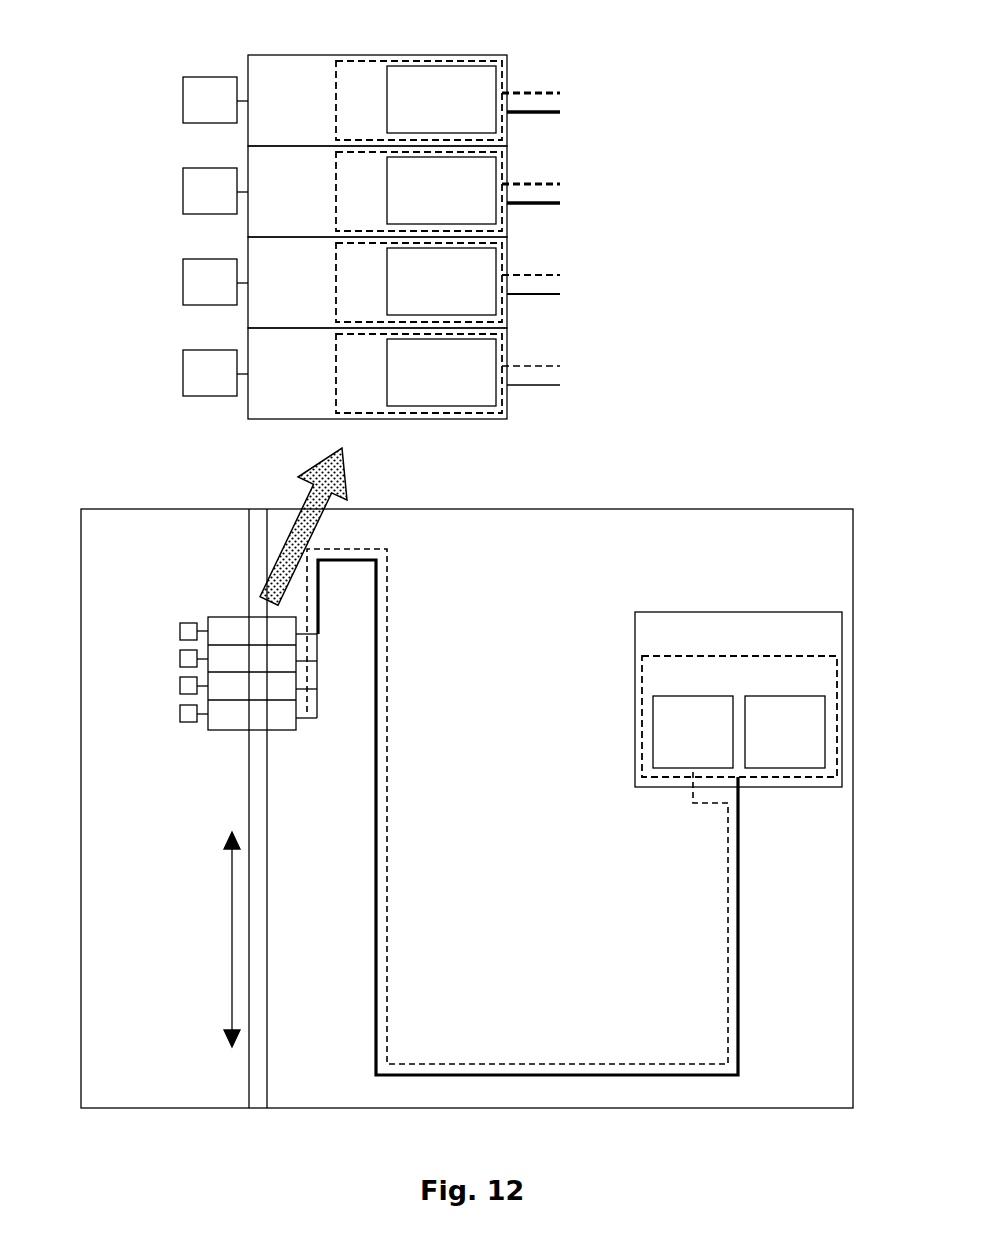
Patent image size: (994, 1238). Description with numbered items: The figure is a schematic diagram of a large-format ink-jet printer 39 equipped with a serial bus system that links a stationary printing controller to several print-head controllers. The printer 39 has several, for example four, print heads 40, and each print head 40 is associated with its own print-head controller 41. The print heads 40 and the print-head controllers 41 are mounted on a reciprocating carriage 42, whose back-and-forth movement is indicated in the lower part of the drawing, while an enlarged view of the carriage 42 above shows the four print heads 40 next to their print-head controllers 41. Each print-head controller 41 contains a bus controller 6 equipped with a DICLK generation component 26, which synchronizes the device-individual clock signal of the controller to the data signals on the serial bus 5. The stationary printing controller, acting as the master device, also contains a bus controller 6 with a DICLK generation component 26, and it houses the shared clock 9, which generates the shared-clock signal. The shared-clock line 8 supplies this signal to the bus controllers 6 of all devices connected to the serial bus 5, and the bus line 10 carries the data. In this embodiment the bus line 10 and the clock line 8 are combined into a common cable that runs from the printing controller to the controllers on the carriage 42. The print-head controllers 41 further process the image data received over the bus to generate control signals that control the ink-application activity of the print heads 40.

The serial bus 5 is at (528, 819).
The bus controller 6 is at (586, 419).
The shared-clock line 8 is at (467, 1064).
The shared clock 9 is at (693, 732).
The bus line 10 is at (600, 1075).
The DICLK generation component 26 is at (606, 417).
The ink-jet printer 39 is at (467, 808).
The print head 40 is at (188, 714).
The print-head controller 41 is at (203, 790).
The reciprocating carriage 42 is at (617, 45).